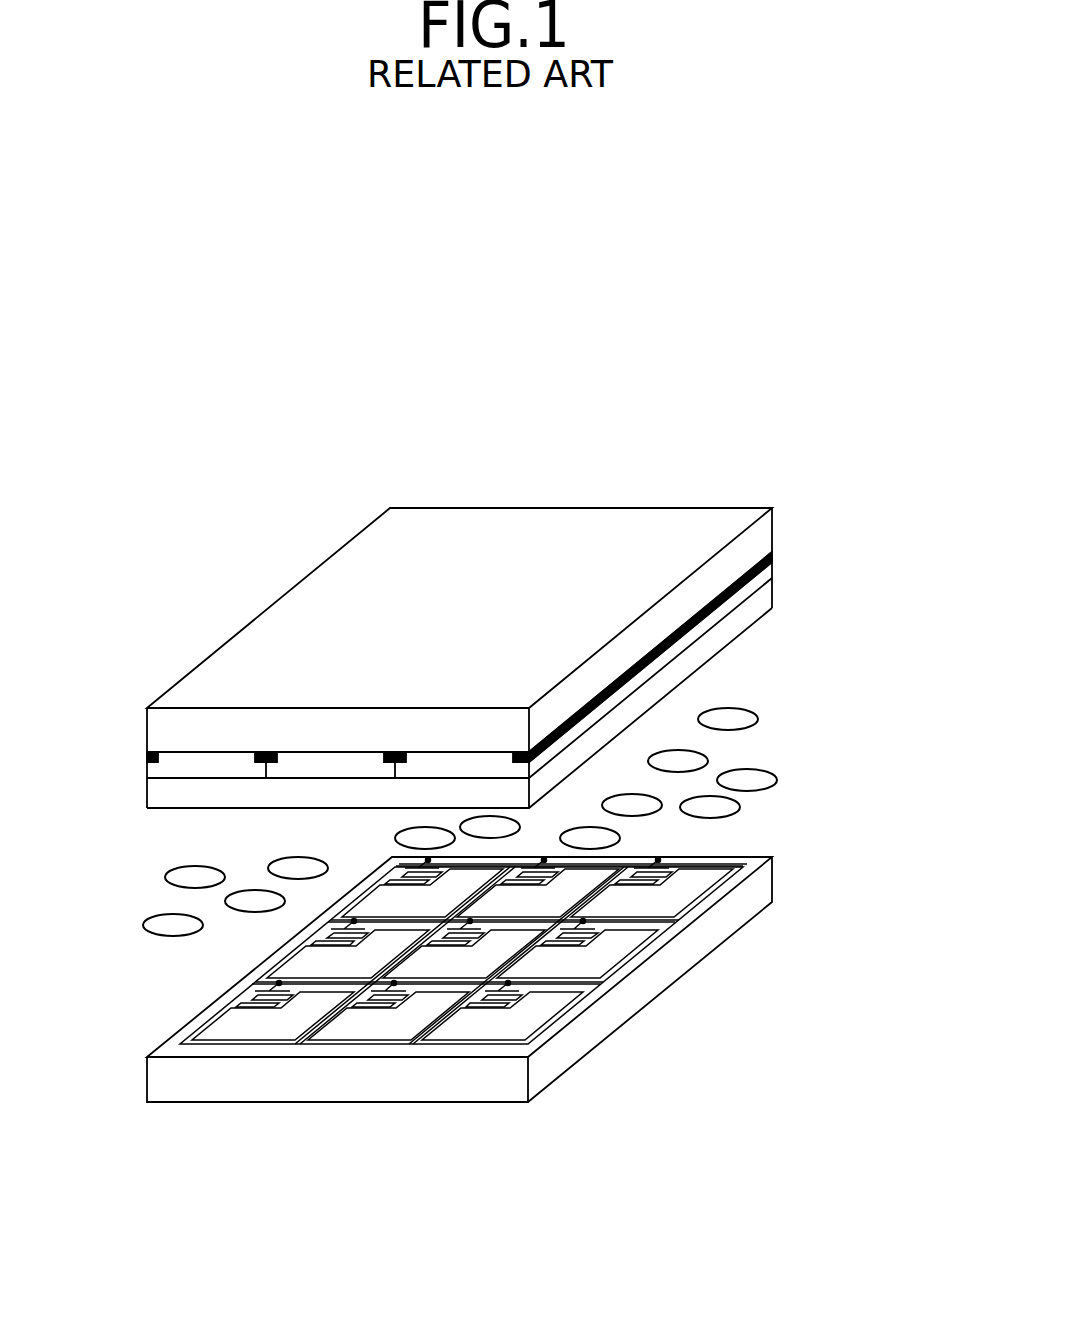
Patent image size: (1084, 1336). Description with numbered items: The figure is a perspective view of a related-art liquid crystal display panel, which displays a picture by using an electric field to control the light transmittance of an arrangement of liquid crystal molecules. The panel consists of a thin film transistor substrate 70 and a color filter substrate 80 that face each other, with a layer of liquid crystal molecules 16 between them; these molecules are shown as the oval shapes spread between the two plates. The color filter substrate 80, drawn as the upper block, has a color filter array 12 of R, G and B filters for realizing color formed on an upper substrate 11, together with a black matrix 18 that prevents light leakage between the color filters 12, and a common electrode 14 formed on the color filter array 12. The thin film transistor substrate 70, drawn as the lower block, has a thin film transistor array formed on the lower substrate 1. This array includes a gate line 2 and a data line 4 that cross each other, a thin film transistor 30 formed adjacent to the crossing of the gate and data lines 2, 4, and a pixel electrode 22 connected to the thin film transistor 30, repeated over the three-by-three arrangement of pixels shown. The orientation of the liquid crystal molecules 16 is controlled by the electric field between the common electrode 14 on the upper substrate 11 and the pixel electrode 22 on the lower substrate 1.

The color filter substrate 80 is at (497, 627).
The upper substrate 11 is at (767, 535).
The color filter array 12 is at (767, 566).
The common electrode 14 is at (767, 596).
The black matrix 18 is at (147, 760).
The liquid crystal molecules 16 is at (745, 721).
The thin film transistor substrate 70 is at (553, 1048).
The lower substrate 1 is at (760, 897).
The gate line 2 is at (672, 925).
The data line 4 is at (415, 1042).
The pixel electrode 22 is at (538, 1008).
The thin film transistor 30 is at (503, 1003).